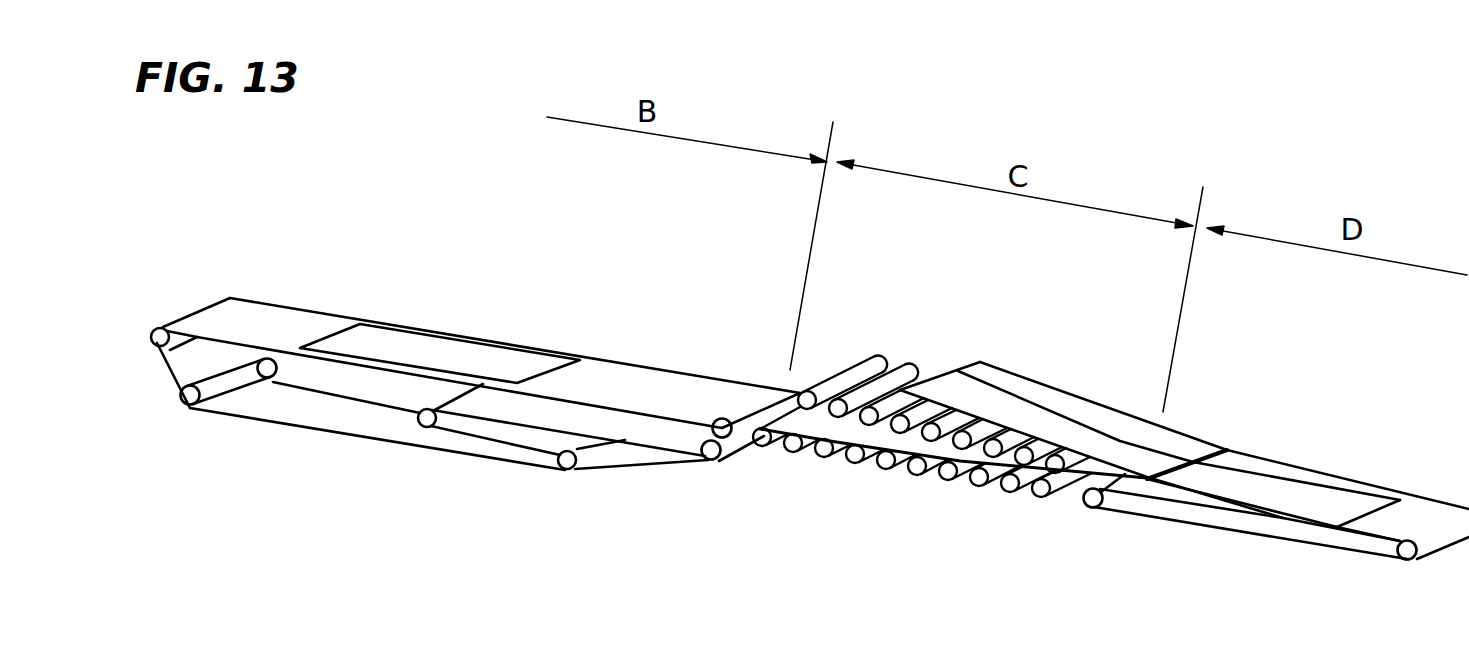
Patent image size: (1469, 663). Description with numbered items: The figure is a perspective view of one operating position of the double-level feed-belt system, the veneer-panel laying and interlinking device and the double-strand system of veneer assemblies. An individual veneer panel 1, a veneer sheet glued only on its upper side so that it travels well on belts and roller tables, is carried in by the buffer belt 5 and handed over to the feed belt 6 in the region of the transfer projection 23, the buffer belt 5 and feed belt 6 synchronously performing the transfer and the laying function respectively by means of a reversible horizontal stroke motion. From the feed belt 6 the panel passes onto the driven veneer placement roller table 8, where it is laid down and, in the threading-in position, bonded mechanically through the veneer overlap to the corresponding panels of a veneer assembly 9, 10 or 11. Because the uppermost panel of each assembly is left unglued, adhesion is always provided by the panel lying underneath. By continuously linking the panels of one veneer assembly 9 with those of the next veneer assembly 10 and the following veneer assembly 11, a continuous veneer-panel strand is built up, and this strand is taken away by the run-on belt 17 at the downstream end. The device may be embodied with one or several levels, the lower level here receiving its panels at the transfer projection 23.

The veneer panel 1 is at (437, 338).
The buffer belt 5 is at (257, 325).
The feed belt 6 is at (820, 416).
The driven veneer placement roller table 8 is at (902, 377).
The veneer assembly 9 is at (1305, 485).
The veneer assembly 10 is at (1070, 405).
The veneer assembly 11 is at (890, 430).
The run-on belt 17 is at (1350, 542).
The transfer projection 23 is at (712, 440).